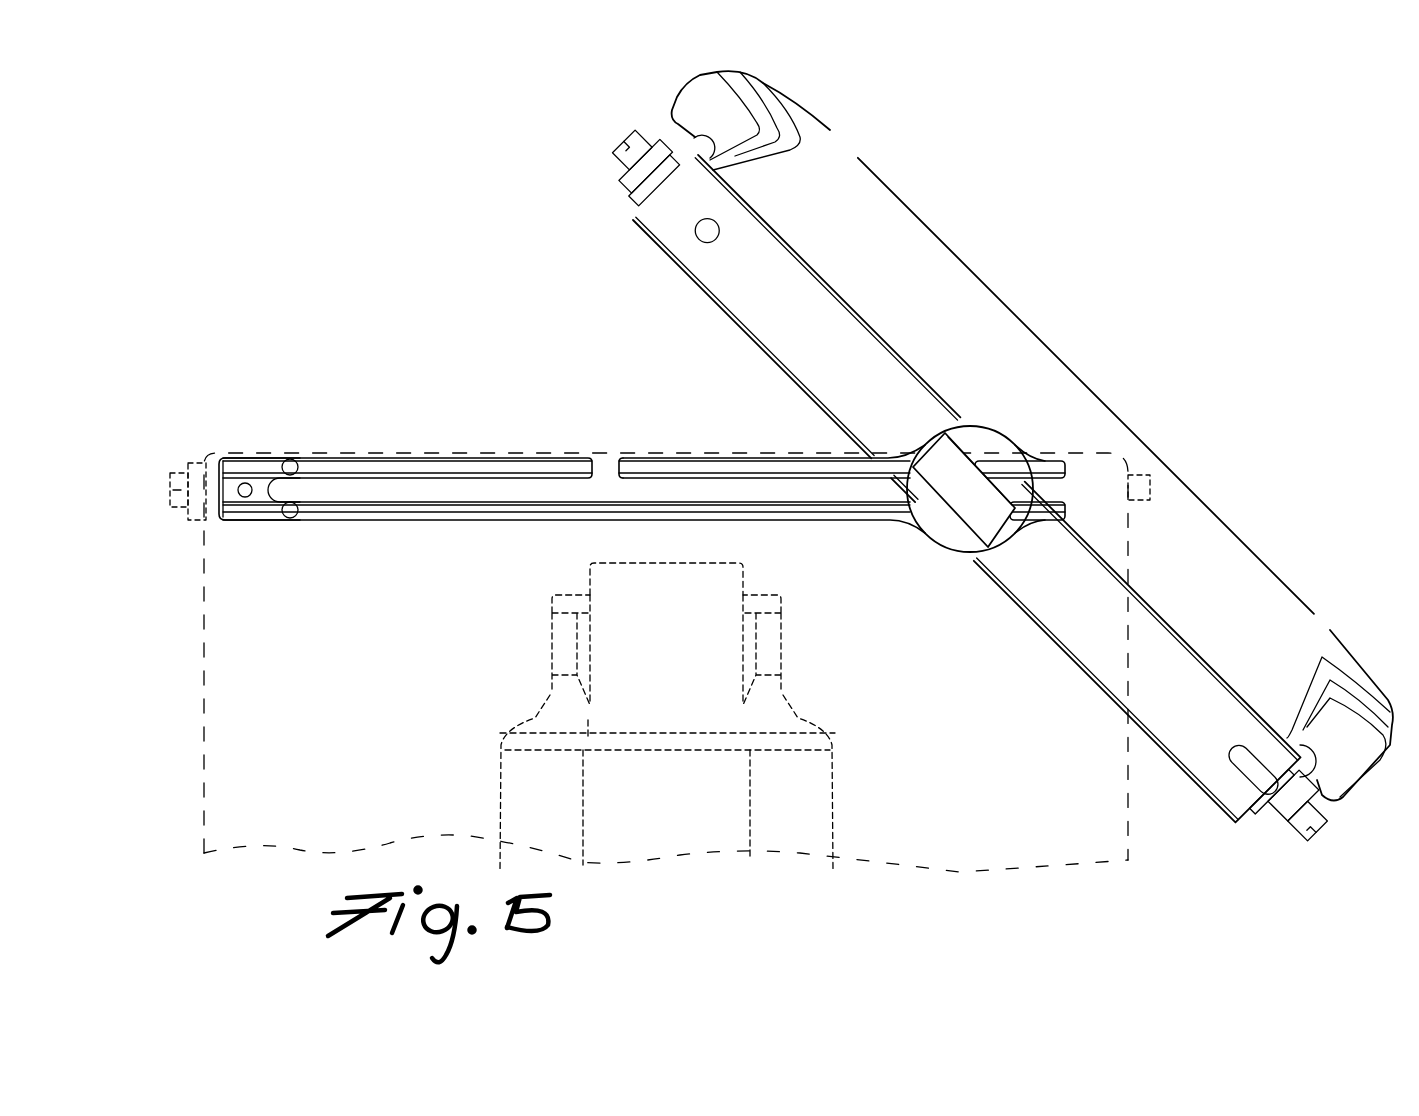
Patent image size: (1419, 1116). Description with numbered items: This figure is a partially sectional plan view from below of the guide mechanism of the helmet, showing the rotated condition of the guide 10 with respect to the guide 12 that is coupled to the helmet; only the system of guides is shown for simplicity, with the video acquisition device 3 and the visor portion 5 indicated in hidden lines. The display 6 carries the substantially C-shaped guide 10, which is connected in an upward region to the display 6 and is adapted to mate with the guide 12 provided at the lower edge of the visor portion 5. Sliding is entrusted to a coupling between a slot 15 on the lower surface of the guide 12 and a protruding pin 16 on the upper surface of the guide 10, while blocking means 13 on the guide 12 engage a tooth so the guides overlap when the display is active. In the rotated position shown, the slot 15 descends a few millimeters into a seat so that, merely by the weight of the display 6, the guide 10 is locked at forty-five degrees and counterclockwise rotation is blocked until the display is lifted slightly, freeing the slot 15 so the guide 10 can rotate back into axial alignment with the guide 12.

The video acquisition device 3 is at (722, 797).
The visor portion 5 is at (237, 732).
The display 6 is at (932, 268).
The guide 10 is at (750, 283).
The guide 12 is at (430, 520).
The blocking means 13 is at (945, 537).
The slot 15 is at (382, 487).
The protruding pin 16 is at (955, 473).